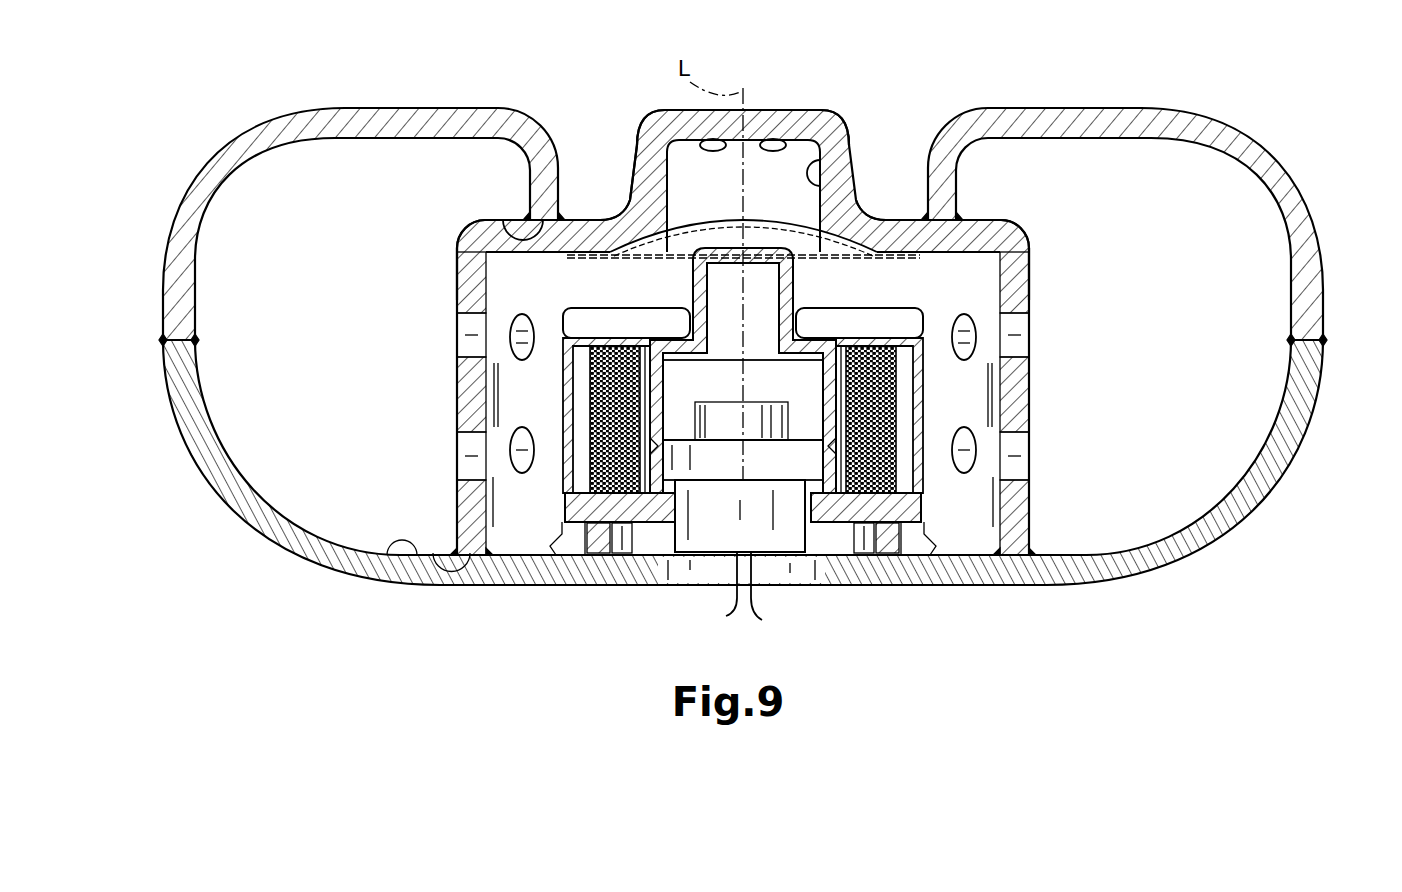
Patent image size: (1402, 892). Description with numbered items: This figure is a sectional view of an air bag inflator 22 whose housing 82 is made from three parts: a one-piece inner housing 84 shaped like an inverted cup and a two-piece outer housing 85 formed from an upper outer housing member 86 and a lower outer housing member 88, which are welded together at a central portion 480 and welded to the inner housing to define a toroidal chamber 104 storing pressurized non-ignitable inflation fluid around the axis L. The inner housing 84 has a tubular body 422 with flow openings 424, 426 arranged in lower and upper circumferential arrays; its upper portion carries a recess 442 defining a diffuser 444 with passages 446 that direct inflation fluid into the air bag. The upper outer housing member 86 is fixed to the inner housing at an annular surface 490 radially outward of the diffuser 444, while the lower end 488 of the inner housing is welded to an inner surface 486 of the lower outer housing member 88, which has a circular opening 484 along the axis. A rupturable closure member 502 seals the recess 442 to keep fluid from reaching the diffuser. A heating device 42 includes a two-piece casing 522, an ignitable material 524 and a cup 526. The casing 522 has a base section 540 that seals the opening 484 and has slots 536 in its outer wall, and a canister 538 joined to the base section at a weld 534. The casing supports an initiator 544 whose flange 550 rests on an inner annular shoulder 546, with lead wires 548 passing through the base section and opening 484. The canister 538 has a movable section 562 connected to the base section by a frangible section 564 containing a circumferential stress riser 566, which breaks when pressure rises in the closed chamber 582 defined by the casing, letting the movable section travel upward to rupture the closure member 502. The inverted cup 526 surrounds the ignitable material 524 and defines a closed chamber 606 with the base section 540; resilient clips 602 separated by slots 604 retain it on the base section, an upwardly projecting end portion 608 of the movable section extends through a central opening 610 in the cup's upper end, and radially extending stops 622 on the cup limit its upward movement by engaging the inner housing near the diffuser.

The inflator 22 is at (724, 319).
The housing 82 is at (812, 112).
The inner housing 84 is at (930, 217).
The outer housing 85 is at (1328, 343).
The upper outer housing member 86 is at (162, 312).
The lower outer housing member 88 is at (178, 353).
The toroidal chamber 104 is at (1153, 245).
The heating device 42 is at (1002, 348).
The tubular body 422 is at (1030, 377).
The flow openings 424 is at (1013, 482).
The flow openings 426 is at (932, 378).
The recess 442 is at (893, 225).
The diffuser 444 is at (625, 135).
The passages 446 is at (658, 128).
The central portion 480 is at (160, 340).
The circular opening 484 is at (823, 563).
The inner surface 486 is at (433, 585).
The lower end 488 is at (437, 553).
The annular surface 490 is at (513, 226).
The closure member 502 is at (790, 218).
The casing 522 is at (578, 470).
The ignitable material 524 is at (867, 367).
The cup 526 is at (928, 312).
The weld 534 is at (837, 500).
The slots 536 is at (900, 462).
The canister 538 is at (640, 452).
The base section 540 is at (888, 490).
The initiator 544 is at (755, 470).
The inner annular shoulder 546 is at (697, 480).
The lead wires 548 is at (750, 615).
The flange 550 is at (682, 455).
The movable section 562 is at (647, 343).
The frangible section 564 is at (900, 438).
The stress riser 566 is at (622, 440).
The closed chamber 582 is at (723, 348).
The resilient clips 602 is at (1030, 518).
The slots 604 is at (927, 513).
The closed chamber 606 is at (583, 378).
The end portion 608 is at (723, 258).
The central opening 610 is at (795, 305).
The stops 622 is at (583, 306).